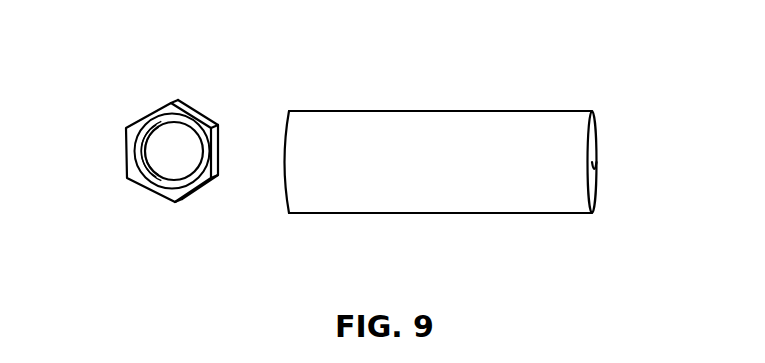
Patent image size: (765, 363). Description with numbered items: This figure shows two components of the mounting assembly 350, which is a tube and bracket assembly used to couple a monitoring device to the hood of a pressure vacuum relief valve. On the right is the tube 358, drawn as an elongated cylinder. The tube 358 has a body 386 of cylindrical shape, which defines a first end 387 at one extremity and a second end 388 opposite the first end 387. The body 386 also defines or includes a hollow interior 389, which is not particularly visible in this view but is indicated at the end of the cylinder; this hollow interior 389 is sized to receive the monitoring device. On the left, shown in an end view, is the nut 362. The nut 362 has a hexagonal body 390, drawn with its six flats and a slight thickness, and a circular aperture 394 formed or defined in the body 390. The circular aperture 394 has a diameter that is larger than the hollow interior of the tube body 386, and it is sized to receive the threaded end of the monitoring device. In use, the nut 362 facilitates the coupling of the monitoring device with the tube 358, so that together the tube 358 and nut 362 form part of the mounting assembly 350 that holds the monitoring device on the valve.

The mounting assembly 350 is at (364, 163).
The tube 358 is at (470, 92).
The nut 362 is at (140, 203).
The body 386 is at (550, 160).
The first end 387 is at (283, 168).
The second end 388 is at (597, 132).
The hollow interior 389 is at (597, 187).
The hexagonal body 390 is at (151, 123).
The circular aperture 394 is at (178, 118).